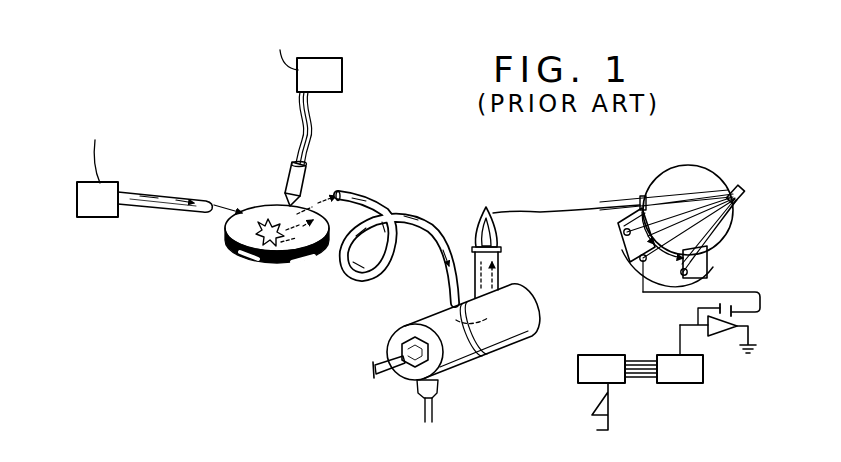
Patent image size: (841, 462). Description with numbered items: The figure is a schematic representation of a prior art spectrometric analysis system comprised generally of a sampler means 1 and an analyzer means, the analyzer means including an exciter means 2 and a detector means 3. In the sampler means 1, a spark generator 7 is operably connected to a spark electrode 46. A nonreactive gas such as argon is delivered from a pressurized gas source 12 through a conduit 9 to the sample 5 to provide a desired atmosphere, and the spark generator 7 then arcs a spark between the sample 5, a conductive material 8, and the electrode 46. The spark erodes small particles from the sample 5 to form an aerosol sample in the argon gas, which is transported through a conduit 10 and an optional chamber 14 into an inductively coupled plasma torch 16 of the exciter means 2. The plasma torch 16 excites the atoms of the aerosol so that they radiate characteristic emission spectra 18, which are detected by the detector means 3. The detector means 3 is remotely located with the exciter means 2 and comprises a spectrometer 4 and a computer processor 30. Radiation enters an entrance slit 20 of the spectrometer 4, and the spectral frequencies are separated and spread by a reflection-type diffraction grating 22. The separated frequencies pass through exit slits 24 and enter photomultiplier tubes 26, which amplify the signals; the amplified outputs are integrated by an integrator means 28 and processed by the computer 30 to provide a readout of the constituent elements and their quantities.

The sampler means 1 is at (212, 146).
The exciter means 2 is at (468, 170).
The detector means 3 is at (698, 136).
The spectrometer 4 is at (680, 162).
The sample 5 is at (253, 255).
The spark generator means 7 is at (330, 78).
The conductive material 8 is at (267, 218).
The conduit 9 is at (177, 208).
The conduit 10 is at (365, 280).
The pressurized gas source 12 is at (97, 217).
The chamber 14 is at (497, 337).
The inductively coupled plasma torch 16 is at (483, 210).
The emission spectra 18 is at (538, 217).
The entrance slit 20 is at (637, 197).
The reflection-type diffraction grating 22 is at (740, 186).
The exit slits 24 is at (622, 242).
The photomultiplier tubes 26 is at (623, 232).
The integrator means 28 is at (730, 333).
The computer processor 30 is at (645, 383).
The spark electrode 46 is at (301, 177).